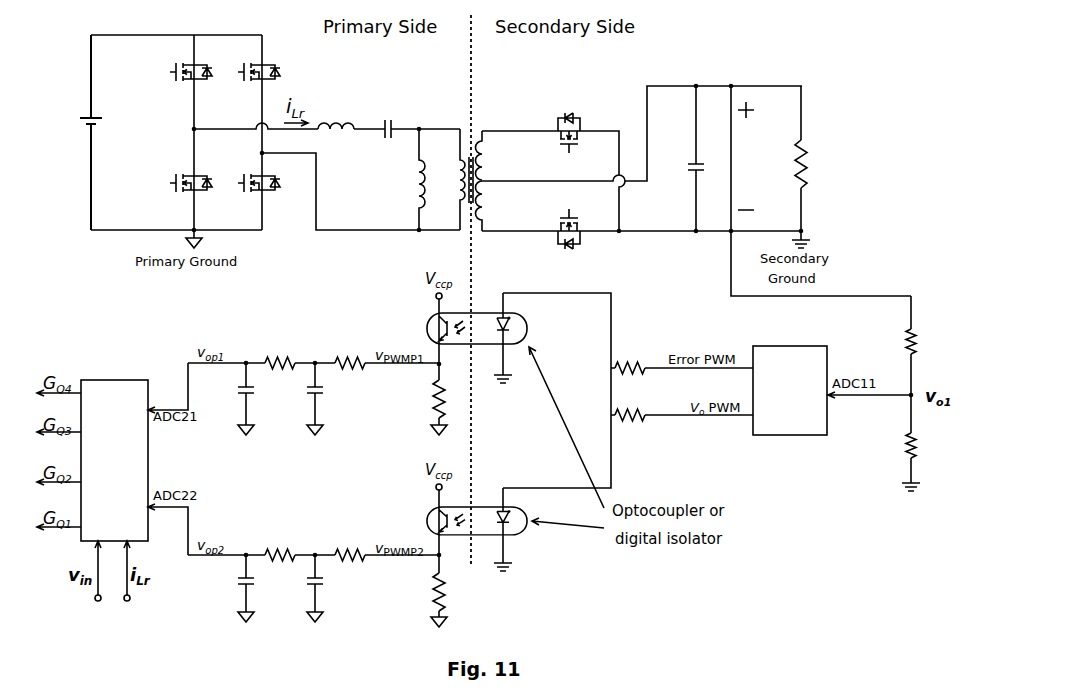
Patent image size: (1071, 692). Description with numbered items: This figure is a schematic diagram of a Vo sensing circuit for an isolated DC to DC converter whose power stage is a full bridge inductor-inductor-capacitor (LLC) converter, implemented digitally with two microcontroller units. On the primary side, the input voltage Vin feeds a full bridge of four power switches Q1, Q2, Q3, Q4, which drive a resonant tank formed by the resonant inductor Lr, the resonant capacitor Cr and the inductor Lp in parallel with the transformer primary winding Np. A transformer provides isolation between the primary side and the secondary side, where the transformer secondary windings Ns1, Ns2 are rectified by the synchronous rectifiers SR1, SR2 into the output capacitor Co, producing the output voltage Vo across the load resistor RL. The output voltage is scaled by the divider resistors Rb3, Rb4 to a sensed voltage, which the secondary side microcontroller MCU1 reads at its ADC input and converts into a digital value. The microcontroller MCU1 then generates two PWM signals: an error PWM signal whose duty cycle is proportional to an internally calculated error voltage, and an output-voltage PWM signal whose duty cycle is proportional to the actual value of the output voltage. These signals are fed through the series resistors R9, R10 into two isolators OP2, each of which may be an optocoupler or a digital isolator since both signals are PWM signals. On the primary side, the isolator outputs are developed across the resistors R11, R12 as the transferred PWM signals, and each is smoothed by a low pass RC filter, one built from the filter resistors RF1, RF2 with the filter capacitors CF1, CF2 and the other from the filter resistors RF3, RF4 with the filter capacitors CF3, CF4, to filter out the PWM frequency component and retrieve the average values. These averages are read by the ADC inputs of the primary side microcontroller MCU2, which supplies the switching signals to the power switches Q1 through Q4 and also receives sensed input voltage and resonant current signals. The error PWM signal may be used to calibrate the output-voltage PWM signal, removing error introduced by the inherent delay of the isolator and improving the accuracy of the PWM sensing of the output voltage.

The power switch Q1 is at (189, 84).
The power switch Q2 is at (189, 197).
The power switch Q3 is at (257, 84).
The power switch Q4 is at (257, 197).
The input voltage Vin is at (106, 132).
The resonant inductor Lr is at (336, 148).
The resonant capacitor Cr is at (385, 146).
The magnetizing inductor Lp is at (406, 179).
The transformer primary winding Np is at (453, 179).
The transformer secondary winding Ns1 is at (495, 158).
The transformer secondary winding Ns2 is at (495, 206).
The synchronous rectifier SR1 is at (584, 123).
The synchronous rectifier SR2 is at (584, 225).
The output capacitor Co is at (678, 158).
The output voltage Vo is at (821, 191).
The load resistor RL is at (816, 167).
The divider resistor Rb3 is at (928, 345).
The divider resistor Rb4 is at (926, 443).
The secondary side microcontroller unit MCU1 is at (790, 390).
The primary side microcontroller unit MCU2 is at (114, 460).
The isolator drive resistor R9 is at (682, 360).
The isolator drive resistor R10 is at (682, 406).
The pull-down resistor R11 is at (423, 399).
The pull-down resistor R12 is at (423, 591).
The optocoupler or digital isolator OP2 is at (496, 432).
The filter resistor RF1 is at (349, 353).
The filter resistor RF2 is at (279, 353).
The filter resistor RF3 is at (349, 545).
The filter resistor RF4 is at (279, 545).
The filter capacitor CF1 is at (327, 399).
The filter capacitor CF2 is at (259, 399).
The filter capacitor CF3 is at (327, 588).
The filter capacitor CF4 is at (259, 588).